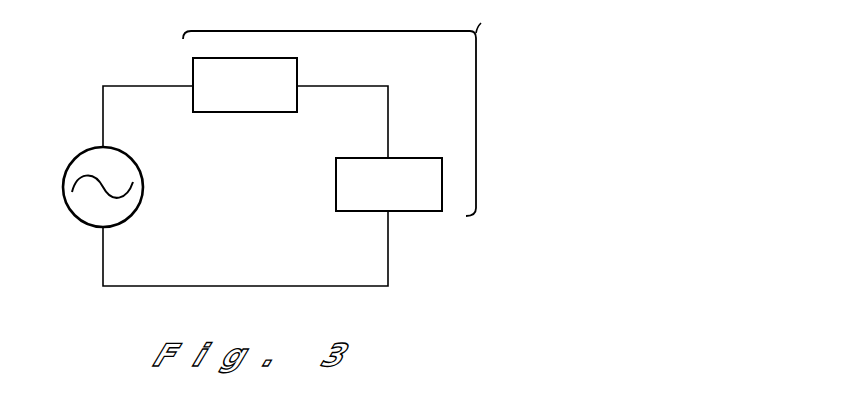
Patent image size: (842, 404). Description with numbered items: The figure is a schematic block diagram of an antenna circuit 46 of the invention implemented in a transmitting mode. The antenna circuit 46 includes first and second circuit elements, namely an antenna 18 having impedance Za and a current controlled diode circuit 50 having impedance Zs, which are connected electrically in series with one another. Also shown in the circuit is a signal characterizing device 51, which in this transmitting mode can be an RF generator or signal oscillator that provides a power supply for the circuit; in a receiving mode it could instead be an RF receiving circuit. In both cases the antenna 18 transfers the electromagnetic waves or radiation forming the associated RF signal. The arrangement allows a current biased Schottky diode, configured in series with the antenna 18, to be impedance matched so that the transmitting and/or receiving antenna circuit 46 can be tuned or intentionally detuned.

The antenna 18 is at (253, 112).
The current controlled diode circuit 50 is at (360, 212).
The signal characterizing device 51 is at (73, 213).
The antenna circuit 46 is at (344, 108).